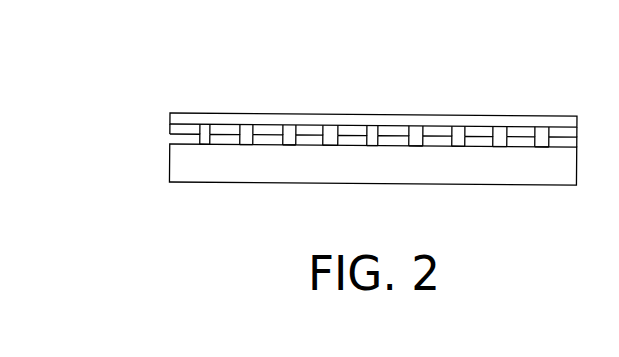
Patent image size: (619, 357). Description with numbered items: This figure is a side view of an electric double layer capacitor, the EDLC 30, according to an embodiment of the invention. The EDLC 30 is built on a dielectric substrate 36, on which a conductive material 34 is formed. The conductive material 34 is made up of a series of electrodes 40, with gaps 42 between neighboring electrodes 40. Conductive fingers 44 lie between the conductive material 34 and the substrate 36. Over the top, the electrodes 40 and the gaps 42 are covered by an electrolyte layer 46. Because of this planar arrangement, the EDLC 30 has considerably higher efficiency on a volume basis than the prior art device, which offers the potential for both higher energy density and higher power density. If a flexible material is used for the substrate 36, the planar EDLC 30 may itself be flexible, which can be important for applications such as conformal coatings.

The EDLC 30 is at (152, 88).
The conductive material 34 is at (147, 118).
The dielectric substrate 36 is at (185, 163).
The electrodes 40 is at (313, 118).
The gaps 42 is at (416, 132).
The conductive fingers 44 is at (270, 144).
The electrolyte layer 46 is at (457, 122).